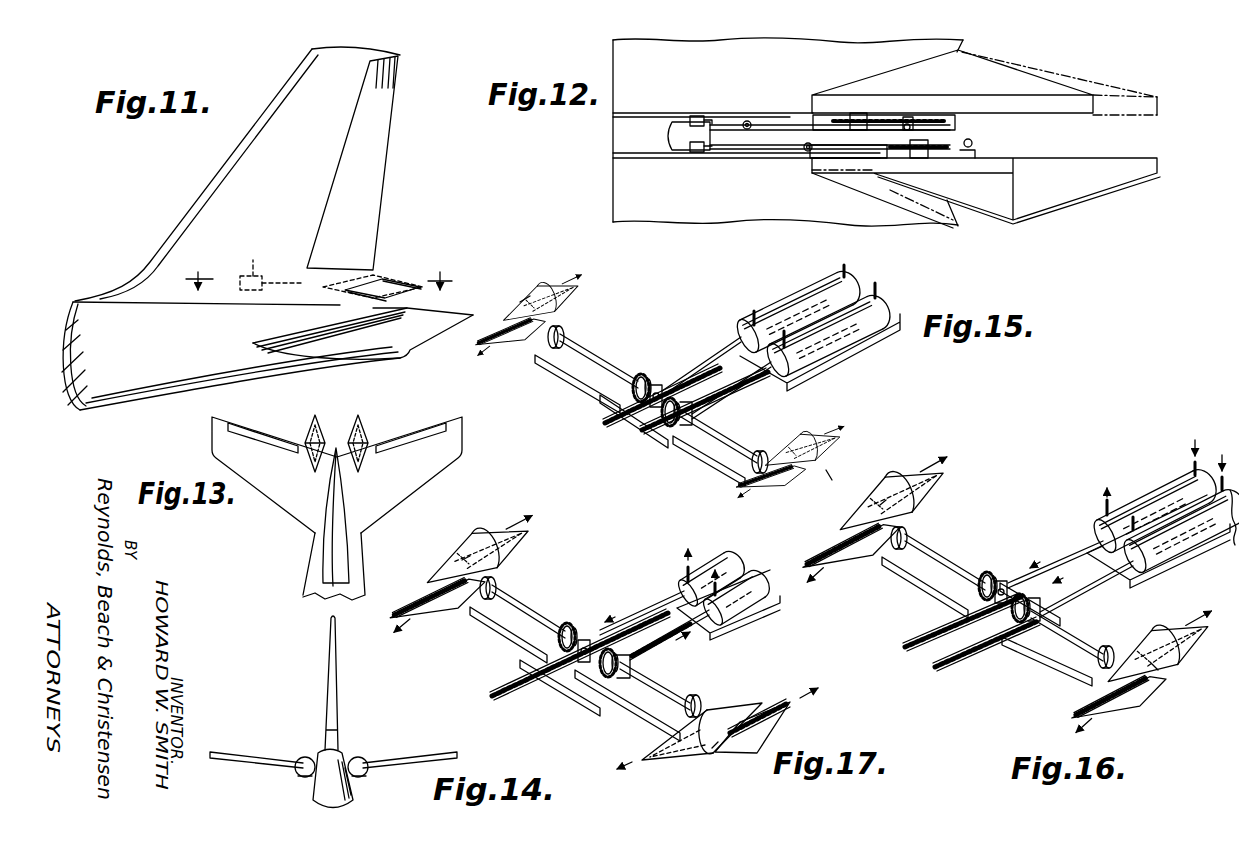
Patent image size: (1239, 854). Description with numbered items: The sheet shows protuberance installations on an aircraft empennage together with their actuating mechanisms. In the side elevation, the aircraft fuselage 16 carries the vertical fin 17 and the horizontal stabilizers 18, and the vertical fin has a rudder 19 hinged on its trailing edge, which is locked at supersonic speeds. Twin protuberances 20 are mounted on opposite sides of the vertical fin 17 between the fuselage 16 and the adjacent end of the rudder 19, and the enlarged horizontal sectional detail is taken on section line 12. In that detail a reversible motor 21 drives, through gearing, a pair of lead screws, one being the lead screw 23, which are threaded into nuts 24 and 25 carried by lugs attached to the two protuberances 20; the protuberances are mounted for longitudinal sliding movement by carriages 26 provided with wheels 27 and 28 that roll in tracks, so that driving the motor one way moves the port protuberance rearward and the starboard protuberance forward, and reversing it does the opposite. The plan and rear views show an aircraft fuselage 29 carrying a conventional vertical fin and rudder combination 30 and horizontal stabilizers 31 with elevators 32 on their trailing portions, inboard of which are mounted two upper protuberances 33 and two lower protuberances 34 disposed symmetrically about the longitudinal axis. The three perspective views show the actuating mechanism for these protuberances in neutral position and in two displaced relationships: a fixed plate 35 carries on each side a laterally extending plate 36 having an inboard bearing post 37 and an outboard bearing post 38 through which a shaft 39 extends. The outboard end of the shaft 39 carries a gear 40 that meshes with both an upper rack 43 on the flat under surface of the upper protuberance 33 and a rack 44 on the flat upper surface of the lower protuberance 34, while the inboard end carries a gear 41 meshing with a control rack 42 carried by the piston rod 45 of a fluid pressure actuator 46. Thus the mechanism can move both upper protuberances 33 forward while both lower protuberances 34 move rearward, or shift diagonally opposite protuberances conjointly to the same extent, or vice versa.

In FIG. 11, the section line 12 is at (321, 272).
In FIG. 11, the aircraft fuselage 16 is at (181, 353).
In FIG. 11, the vertical fin 17 is at (216, 192).
In FIG. 11, the horizontal stabilizers 18 is at (288, 343).
In FIG. 11, the rudder 19 is at (365, 195).
In FIG. 11, the protuberances 20 is at (385, 282).
In FIG. 12, the protuberances 20 is at (1010, 80).
In FIG. 11, the motor 21 is at (270, 267).
In FIG. 12, the motor 21 is at (672, 133).
In FIG. 12, the lead screw 23 is at (745, 149).
In FIG. 12, the nut 24 is at (857, 113).
In FIG. 12, the nut 25 is at (920, 152).
In FIG. 12, the carriages 26 is at (783, 120).
In FIG. 12, the wheels 27 is at (748, 119).
In FIG. 12, the wheels 28 is at (910, 118).
In FIG. 13, the aircraft fuselage 29 is at (312, 580).
In FIG. 14, the aircraft fuselage 29 is at (315, 797).
In FIG. 13, the vertical fin and rudder combination 30 is at (335, 555).
In FIG. 14, the vertical fin and rudder combination 30 is at (328, 665).
In FIG. 13, the horizontal stabilizers 31 is at (290, 497).
In FIG. 13, the elevators 32 is at (263, 433).
In FIG. 13, the upper protuberances 33 is at (318, 437).
In FIG. 14, the upper protuberances 33 is at (300, 757).
In FIG. 15, the upper protuberances 33 is at (560, 285).
In FIG. 17, the upper protuberances 33 is at (500, 535).
In FIG. 16, the upper protuberances 33 is at (930, 493).
In FIG. 14, the lower protuberances 34 is at (298, 776).
In FIG. 15, the lower protuberances 34 is at (793, 496).
In FIG. 17, the lower protuberances 34 is at (455, 605).
In FIG. 16, the lower protuberances 34 is at (855, 563).
In FIG. 15, the fixed plate 35 is at (632, 421).
In FIG. 17, the fixed plate 35 is at (560, 672).
In FIG. 16, the fixed plate 35 is at (1060, 610).
In FIG. 15, the laterally extending plate 36 is at (615, 395).
In FIG. 17, the laterally extending plate 36 is at (525, 620).
In FIG. 16, the laterally extending plate 36 is at (953, 560).
In FIG. 15, the bearing post 37 is at (641, 380).
In FIG. 17, the bearing post 37 is at (567, 632).
In FIG. 16, the bearing post 37 is at (1010, 625).
In FIG. 15, the bearing post 38 is at (563, 335).
In FIG. 17, the bearing post 38 is at (493, 585).
In FIG. 16, the bearing post 38 is at (903, 548).
In FIG. 15, the shaft 39 is at (598, 355).
In FIG. 17, the shaft 39 is at (520, 610).
In FIG. 16, the shaft 39 is at (918, 552).
In FIG. 15, the gear 40 is at (528, 298).
In FIG. 17, the gear 40 is at (460, 590).
In FIG. 16, the gear 40 is at (1165, 680).
In FIG. 15, the gear 41 is at (656, 385).
In FIG. 17, the gear 41 is at (584, 640).
In FIG. 16, the gear 41 is at (1002, 588).
In FIG. 15, the control rack 42 is at (686, 371).
In FIG. 17, the control rack 42 is at (510, 680).
In FIG. 16, the control rack 42 is at (915, 640).
In FIG. 15, the upper rack 43 is at (512, 300).
In FIG. 17, the upper rack 43 is at (460, 552).
In FIG. 16, the upper rack 43 is at (948, 495).
In FIG. 15, the rack 44 is at (492, 348).
In FIG. 17, the rack 44 is at (415, 608).
In FIG. 16, the rack 44 is at (815, 560).
In FIG. 15, the piston rod 45 is at (720, 352).
In FIG. 17, the piston rod 45 is at (642, 612).
In FIG. 16, the piston rod 45 is at (1062, 552).
In FIG. 15, the fluid pressure actuator 46 is at (825, 291).
In FIG. 17, the fluid pressure actuator 46 is at (722, 558).
In FIG. 16, the fluid pressure actuator 46 is at (1170, 497).